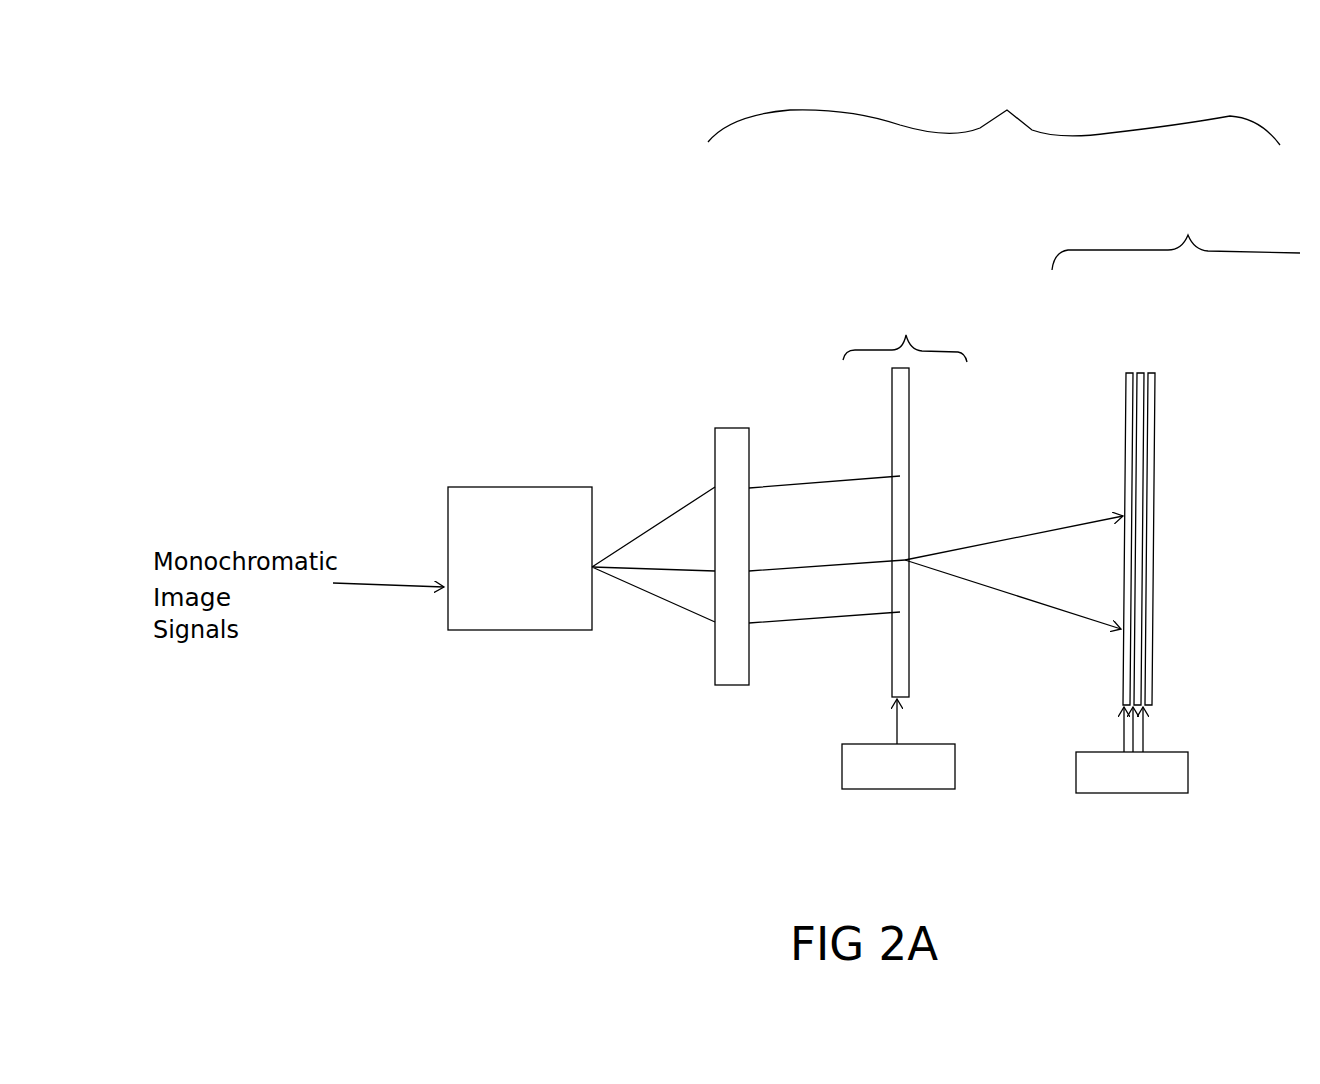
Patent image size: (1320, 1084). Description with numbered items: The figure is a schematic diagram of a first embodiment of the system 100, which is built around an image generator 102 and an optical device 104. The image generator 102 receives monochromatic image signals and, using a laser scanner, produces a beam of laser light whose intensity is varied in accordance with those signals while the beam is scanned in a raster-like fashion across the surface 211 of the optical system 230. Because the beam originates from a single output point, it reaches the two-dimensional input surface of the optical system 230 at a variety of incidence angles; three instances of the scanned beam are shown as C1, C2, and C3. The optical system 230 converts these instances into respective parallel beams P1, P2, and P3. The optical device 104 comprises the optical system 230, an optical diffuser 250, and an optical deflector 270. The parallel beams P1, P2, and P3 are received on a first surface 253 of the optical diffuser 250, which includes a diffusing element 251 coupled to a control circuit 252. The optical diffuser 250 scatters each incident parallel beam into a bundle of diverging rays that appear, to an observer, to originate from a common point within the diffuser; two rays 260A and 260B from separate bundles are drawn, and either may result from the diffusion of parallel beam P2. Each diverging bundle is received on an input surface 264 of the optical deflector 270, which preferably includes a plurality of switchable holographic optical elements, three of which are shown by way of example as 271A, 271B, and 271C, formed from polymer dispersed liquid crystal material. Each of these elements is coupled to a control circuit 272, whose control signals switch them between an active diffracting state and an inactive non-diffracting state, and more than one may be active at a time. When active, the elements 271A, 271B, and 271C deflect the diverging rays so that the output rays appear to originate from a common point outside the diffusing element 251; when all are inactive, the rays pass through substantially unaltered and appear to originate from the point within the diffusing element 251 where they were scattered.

The system 100 is at (493, 266).
The image generator 102 is at (499, 487).
The optical device 104 is at (994, 107).
The surface 211 is at (713, 660).
The optical system 230 is at (736, 426).
The optical diffuser 250 is at (905, 331).
The diffusing element 251 is at (912, 689).
The control circuit 252 is at (898, 744).
The first surface 253 is at (890, 643).
The ray 260A is at (1010, 530).
The ray 260B is at (1040, 608).
The input surface 264 is at (1124, 393).
The optical deflector 270 is at (1176, 449).
The switchable holographic optical element 271A is at (1128, 368).
The switchable holographic optical element 271B is at (1143, 367).
The switchable holographic optical element 271C is at (1156, 369).
The control circuit 272 is at (1132, 750).
The laser light beam instance C1 is at (625, 526).
The laser light beam instance C2 is at (651, 558).
The laser light beam instance C3 is at (682, 598).
The parallel beam P1 is at (846, 472).
The parallel beam P2 is at (821, 553).
The parallel beam P3 is at (787, 610).